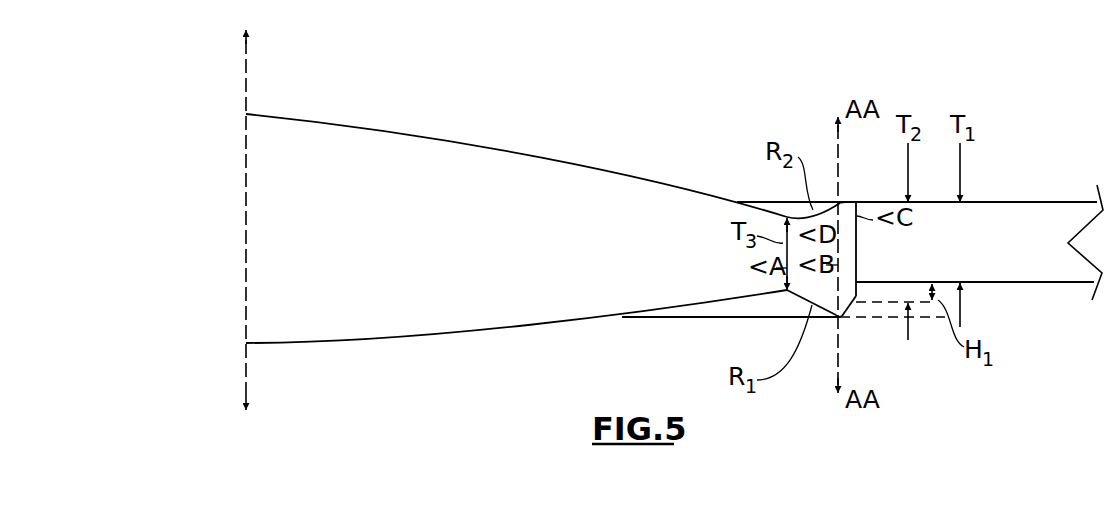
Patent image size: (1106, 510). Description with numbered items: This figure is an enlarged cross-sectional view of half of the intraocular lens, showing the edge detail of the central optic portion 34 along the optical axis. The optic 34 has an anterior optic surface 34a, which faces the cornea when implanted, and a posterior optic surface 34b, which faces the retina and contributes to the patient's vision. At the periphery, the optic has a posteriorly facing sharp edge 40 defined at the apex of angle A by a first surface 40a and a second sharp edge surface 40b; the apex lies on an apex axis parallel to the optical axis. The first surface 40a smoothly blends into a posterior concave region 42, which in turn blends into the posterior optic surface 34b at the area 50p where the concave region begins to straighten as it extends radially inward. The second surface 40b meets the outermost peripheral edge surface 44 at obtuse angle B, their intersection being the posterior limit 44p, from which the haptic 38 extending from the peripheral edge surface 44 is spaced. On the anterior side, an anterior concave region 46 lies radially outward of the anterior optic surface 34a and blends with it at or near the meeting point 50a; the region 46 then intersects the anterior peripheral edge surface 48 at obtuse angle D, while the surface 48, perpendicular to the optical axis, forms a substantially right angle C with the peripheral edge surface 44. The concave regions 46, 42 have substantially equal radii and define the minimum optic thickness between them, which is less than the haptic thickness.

The central optic portion 34 is at (327, 244).
The anterior optic surface 34a is at (328, 121).
The posterior optic surface 34b is at (345, 343).
The haptic 38 is at (995, 215).
The sharp edge 40 is at (677, 318).
The first surface 40a is at (822, 320).
The second sharp edge surface 40b is at (848, 302).
The posterior concave region 42 is at (800, 300).
The outermost peripheral edge surface 44 is at (857, 252).
The posterior limit of the outermost peripheral edge 44p is at (860, 300).
The anterior concave region 46 is at (818, 200).
The anterior peripheral edge surface 48 is at (737, 203).
The meeting point 50a is at (783, 211).
The beginning of the posterior optic surface periphery 50p is at (779, 295).